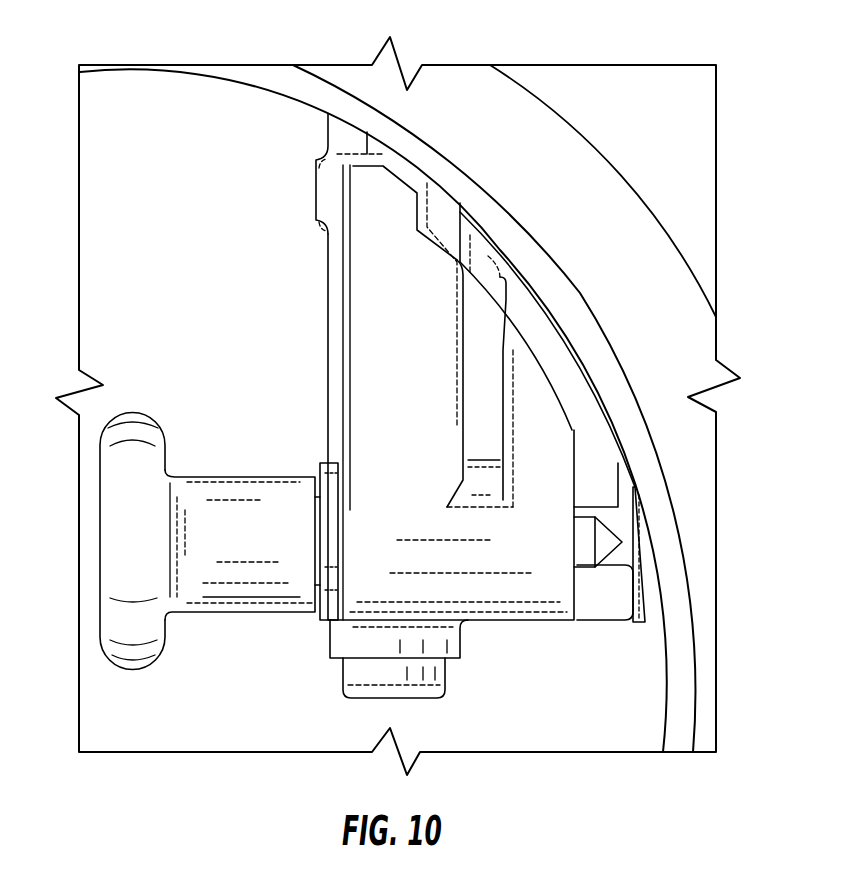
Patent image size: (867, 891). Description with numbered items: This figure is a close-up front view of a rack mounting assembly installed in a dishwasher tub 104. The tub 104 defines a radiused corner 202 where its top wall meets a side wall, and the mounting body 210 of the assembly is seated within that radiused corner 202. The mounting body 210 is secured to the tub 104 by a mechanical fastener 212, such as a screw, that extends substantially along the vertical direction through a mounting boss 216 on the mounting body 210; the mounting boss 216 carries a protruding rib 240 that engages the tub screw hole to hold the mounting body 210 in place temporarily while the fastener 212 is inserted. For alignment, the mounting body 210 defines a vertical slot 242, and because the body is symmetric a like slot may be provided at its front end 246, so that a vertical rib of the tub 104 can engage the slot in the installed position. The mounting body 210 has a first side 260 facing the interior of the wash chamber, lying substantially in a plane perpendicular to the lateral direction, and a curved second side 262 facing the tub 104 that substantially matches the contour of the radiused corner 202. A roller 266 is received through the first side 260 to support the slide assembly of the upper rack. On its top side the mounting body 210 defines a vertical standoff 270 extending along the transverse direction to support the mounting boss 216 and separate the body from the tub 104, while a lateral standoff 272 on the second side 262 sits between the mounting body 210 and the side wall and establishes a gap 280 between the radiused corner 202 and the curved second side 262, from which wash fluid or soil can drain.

The tub 104 is at (672, 278).
The radiused corner 202 is at (490, 222).
The mounting body 210 is at (372, 320).
The mechanical fastener 212 is at (355, 688).
The mounting boss 216 is at (342, 135).
The protruding rib 240 is at (380, 148).
The vertical slot 242 is at (487, 337).
The front end 246 is at (502, 573).
The first side 260 is at (327, 378).
The second side 262 is at (543, 370).
The roller 266 is at (120, 537).
The vertical standoff 270 is at (367, 217).
The lateral standoff 272 is at (610, 594).
The gap 280 is at (596, 487).